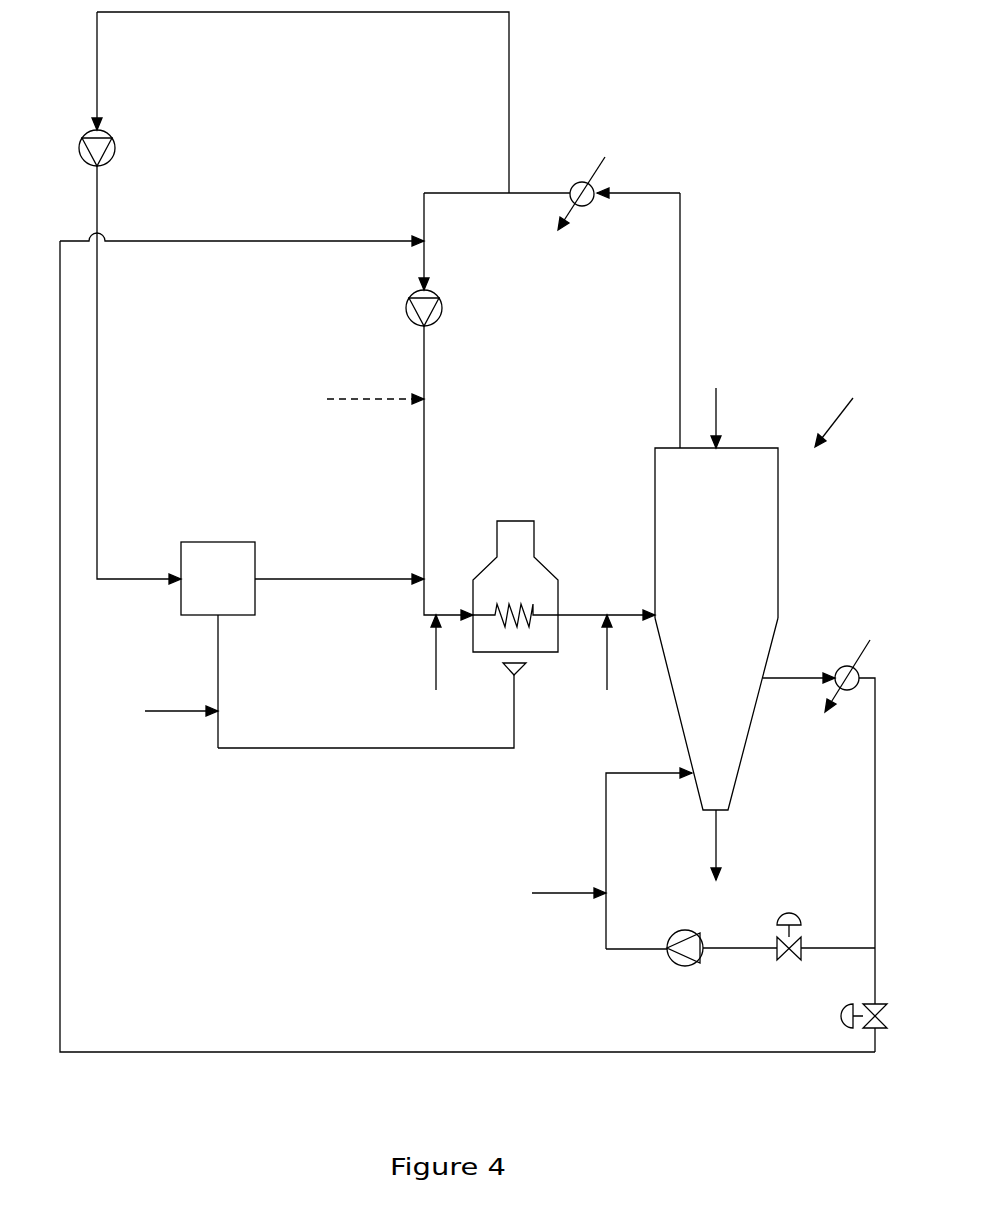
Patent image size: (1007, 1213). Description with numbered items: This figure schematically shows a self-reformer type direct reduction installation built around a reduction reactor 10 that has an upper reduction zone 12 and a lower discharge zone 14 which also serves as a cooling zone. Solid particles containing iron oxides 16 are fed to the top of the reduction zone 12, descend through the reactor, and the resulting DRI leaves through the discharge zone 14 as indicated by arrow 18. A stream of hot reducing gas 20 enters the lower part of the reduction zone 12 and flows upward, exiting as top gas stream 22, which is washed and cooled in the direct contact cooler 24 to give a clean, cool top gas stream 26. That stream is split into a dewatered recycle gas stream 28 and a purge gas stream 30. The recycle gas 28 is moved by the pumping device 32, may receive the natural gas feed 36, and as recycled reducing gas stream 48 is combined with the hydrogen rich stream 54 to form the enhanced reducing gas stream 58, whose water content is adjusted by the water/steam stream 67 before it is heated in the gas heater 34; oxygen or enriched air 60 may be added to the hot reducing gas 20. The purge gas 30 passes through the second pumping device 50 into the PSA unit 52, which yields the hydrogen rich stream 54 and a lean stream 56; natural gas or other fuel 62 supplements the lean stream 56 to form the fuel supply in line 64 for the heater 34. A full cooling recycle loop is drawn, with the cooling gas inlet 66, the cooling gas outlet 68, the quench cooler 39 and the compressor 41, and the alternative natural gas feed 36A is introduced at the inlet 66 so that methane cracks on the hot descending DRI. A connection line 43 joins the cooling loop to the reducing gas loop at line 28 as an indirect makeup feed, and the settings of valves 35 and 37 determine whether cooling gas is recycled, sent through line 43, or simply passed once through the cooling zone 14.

The reduction reactor 10 is at (846, 411).
The reduction zone 12 is at (740, 568).
The discharge zone 14 is at (740, 702).
The solid particles containing iron oxides 16 is at (718, 408).
The DRI discharge 18 is at (716, 835).
The hot reducing gas stream 20 is at (627, 613).
The top gas stream 22 is at (680, 275).
The direct contact cooler 24 is at (578, 181).
The clean and cool top gas stream 26 is at (542, 192).
The dewatered recycle gas stream 28 is at (457, 192).
The purge gas stream 30 is at (509, 60).
The pumping device 32 is at (404, 305).
The gas heater 34 is at (514, 520).
The valve 35 is at (838, 1016).
The natural gas feed 36 is at (383, 400).
The alternative natural gas feed 36A is at (570, 895).
The valve 37 is at (795, 912).
The quench cooler 39 is at (836, 664).
The compressor 41 is at (690, 967).
The connection line 43 is at (405, 1052).
The recycled reducing gas stream 48 is at (424, 520).
The second pumping device 50 is at (116, 148).
The pressure swing adsorber unit 52 is at (181, 615).
The hydrogen rich stream 54 is at (322, 580).
The lean stream 56 is at (218, 665).
The enhanced reducing gas stream 58 is at (424, 620).
The oxygen or oxygen enriched air 60 is at (608, 662).
The natural gas or other fuel 62 is at (170, 712).
The fuel supply line 64 is at (378, 749).
The cooling gas stream inlet 66 is at (604, 812).
The water/steam stream 67 is at (437, 662).
The cooling gas effluent outlet 68 is at (790, 677).